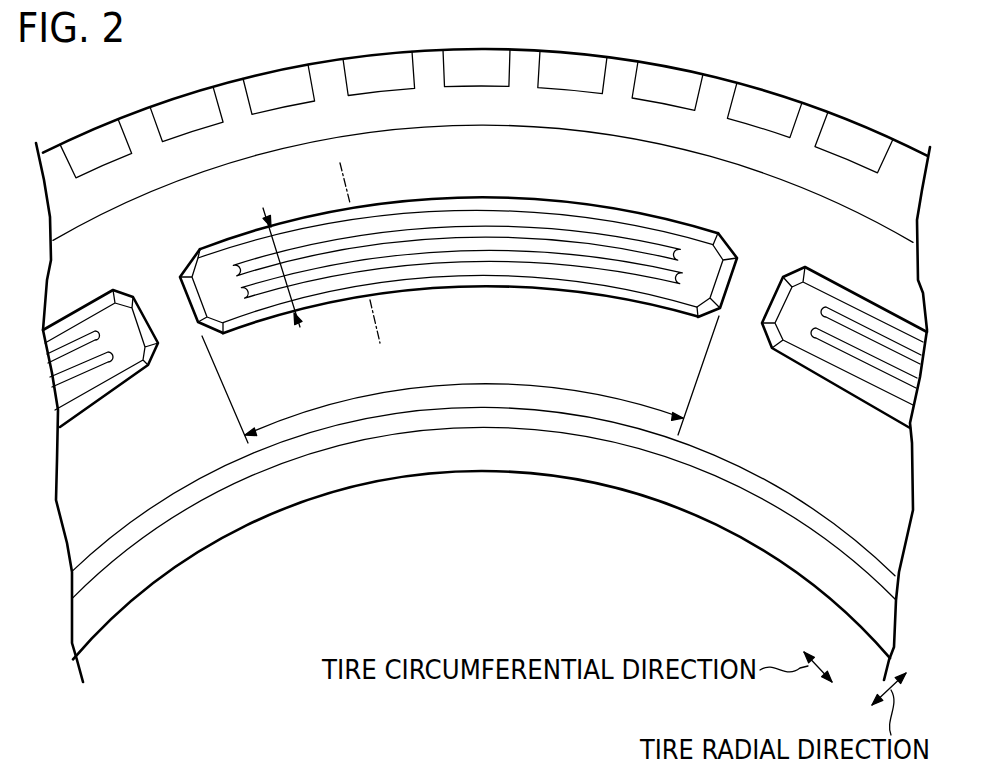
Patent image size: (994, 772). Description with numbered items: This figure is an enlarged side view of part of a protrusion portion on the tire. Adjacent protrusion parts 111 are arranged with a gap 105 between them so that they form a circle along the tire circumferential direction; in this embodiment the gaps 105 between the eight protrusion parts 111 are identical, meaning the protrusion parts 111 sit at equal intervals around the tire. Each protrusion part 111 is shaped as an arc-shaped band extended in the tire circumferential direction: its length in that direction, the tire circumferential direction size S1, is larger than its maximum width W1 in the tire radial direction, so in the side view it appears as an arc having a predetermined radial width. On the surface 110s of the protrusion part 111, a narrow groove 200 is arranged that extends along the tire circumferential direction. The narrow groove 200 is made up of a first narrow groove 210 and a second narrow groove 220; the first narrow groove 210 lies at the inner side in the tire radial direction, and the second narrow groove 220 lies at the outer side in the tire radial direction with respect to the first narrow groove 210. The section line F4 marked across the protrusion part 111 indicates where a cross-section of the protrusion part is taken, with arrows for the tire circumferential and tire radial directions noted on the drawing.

The gap 105 is at (157, 285).
The surface of the protrusion part 110s is at (693, 247).
The protrusion part 111 is at (78, 283).
The narrow groove 200 is at (560, 325).
The first narrow groove 210 is at (465, 250).
The second narrow groove 220 is at (532, 233).
The maximum width W1 is at (285, 245).
The section line F4 is at (388, 162).
The tire circumferential direction size S1 is at (457, 386).